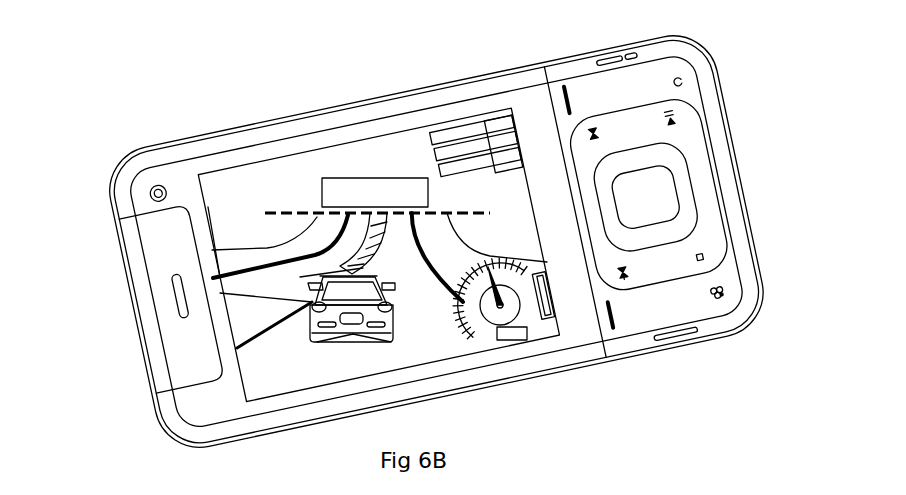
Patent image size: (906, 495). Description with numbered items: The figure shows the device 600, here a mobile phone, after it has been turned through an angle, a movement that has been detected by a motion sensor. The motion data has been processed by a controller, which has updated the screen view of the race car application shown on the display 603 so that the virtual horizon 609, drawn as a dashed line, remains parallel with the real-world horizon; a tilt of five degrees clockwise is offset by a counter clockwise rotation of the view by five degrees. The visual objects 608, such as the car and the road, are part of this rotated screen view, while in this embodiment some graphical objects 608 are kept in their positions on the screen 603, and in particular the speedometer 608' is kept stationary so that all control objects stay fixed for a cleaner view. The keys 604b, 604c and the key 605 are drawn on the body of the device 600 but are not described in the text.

The device 600 is at (146, 136).
The display 603 is at (478, 113).
The side key 604b is at (563, 87).
The side key 604c is at (608, 337).
The navigation key 605 is at (680, 214).
The visual objects 608 is at (362, 285).
The speedometer 608' is at (501, 356).
The virtual horizon 609 is at (303, 213).